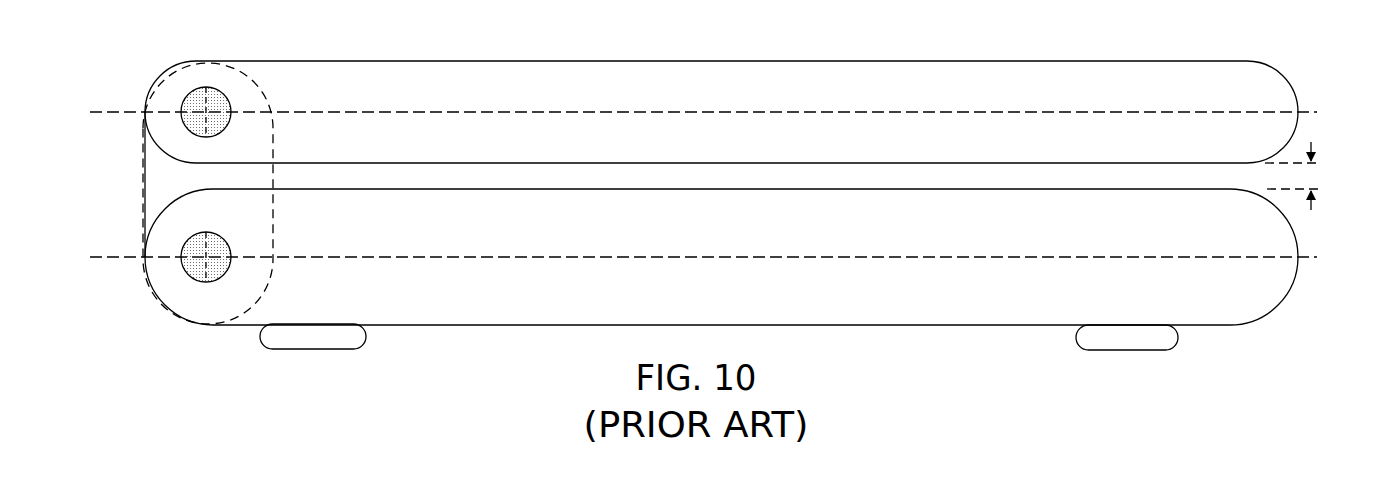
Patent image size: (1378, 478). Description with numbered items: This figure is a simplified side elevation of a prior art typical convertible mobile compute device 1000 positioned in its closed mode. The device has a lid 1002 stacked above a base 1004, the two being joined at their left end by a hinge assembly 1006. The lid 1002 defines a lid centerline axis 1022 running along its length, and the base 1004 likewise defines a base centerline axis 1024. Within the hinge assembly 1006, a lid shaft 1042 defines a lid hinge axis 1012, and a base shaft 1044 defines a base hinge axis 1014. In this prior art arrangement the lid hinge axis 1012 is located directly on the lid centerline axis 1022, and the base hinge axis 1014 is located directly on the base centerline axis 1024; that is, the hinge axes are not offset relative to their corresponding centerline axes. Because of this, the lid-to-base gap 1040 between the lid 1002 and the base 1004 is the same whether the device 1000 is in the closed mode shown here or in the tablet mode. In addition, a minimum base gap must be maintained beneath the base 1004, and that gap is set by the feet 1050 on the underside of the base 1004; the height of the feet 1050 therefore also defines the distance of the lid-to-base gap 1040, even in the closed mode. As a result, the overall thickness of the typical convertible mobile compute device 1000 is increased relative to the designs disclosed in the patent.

The typical convertible mobile compute device 1000 is at (716, 179).
The lid 1002 is at (735, 61).
The base 1004 is at (872, 325).
The hinge assembly 1006 is at (145, 187).
The lid hinge axis 1012 is at (197, 113).
The base hinge axis 1014 is at (196, 258).
The lid centerline axis 1022 is at (808, 112).
The base centerline axis 1024 is at (810, 257).
The lid-to-base gap 1040 is at (1327, 136).
The lid shaft 1042 is at (236, 86).
The base shaft 1044 is at (220, 236).
The feet 1050 is at (719, 337).